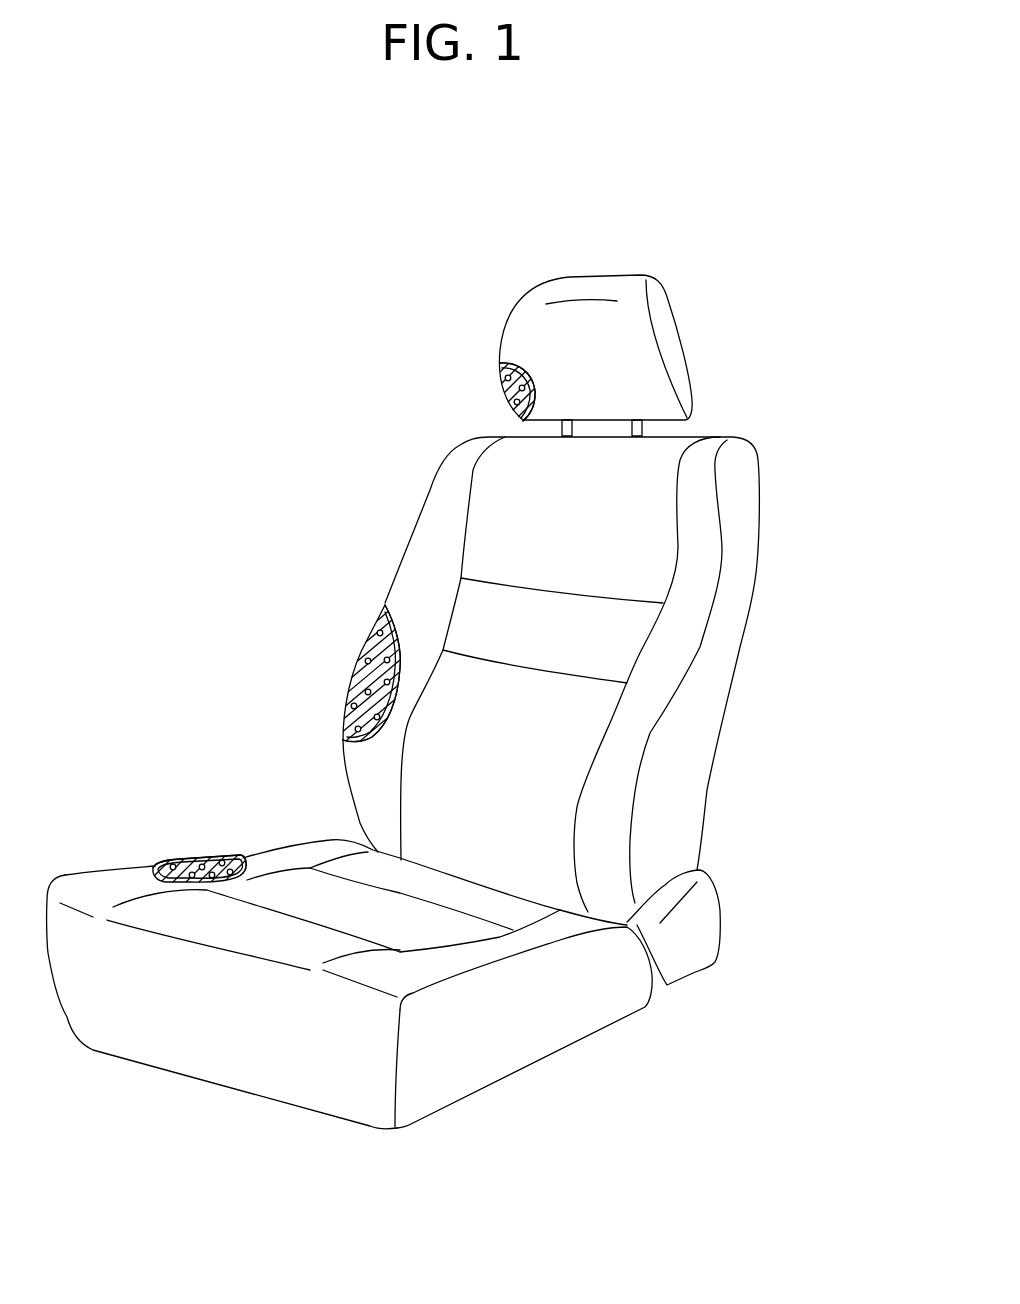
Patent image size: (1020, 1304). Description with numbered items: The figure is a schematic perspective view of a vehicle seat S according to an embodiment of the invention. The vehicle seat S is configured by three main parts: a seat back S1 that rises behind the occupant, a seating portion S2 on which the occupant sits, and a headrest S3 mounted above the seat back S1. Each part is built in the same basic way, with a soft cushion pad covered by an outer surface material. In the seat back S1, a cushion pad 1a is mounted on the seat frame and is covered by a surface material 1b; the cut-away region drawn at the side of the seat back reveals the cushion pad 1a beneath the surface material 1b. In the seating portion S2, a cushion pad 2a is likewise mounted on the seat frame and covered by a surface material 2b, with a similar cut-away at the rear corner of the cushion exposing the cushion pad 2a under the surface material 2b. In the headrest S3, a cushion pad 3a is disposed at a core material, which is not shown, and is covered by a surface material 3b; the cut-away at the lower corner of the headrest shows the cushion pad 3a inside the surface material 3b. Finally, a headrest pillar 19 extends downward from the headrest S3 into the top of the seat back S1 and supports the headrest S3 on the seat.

The vehicle seat S is at (180, 186).
The seat back S1 is at (391, 520).
The seating portion S2 is at (244, 800).
The headrest S3 is at (510, 288).
The cushion pad 1a is at (365, 677).
The surface material 1b is at (383, 605).
The cushion pad 2a is at (193, 862).
The surface material 2b is at (238, 856).
The cushion pad 3a is at (507, 388).
The surface material 3b is at (500, 363).
The headrest pillar 19 is at (643, 430).